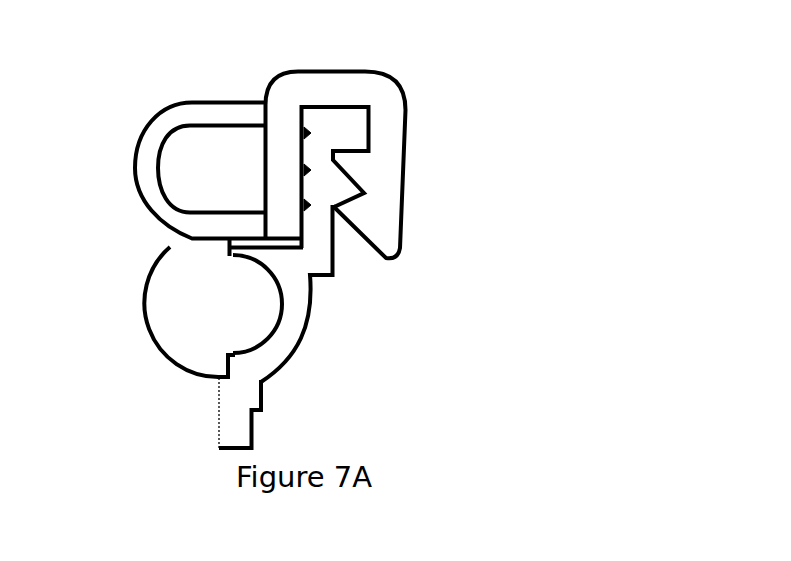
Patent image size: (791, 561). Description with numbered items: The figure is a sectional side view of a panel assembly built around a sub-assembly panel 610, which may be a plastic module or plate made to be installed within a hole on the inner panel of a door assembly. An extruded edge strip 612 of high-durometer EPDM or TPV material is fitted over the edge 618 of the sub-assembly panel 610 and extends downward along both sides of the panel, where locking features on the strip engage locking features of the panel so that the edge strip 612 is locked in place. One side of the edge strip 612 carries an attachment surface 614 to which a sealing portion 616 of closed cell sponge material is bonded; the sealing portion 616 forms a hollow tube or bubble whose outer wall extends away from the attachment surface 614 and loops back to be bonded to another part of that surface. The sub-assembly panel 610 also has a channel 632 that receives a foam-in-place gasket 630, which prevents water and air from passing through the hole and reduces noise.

The sub-assembly panel 610 is at (260, 402).
The edge strip 612 is at (400, 100).
The attachment surface 614 is at (258, 217).
The sealing portion 616 is at (192, 102).
The edge 618 is at (337, 103).
The foam-in-place gasket 630 is at (167, 312).
The channel 632 is at (320, 318).